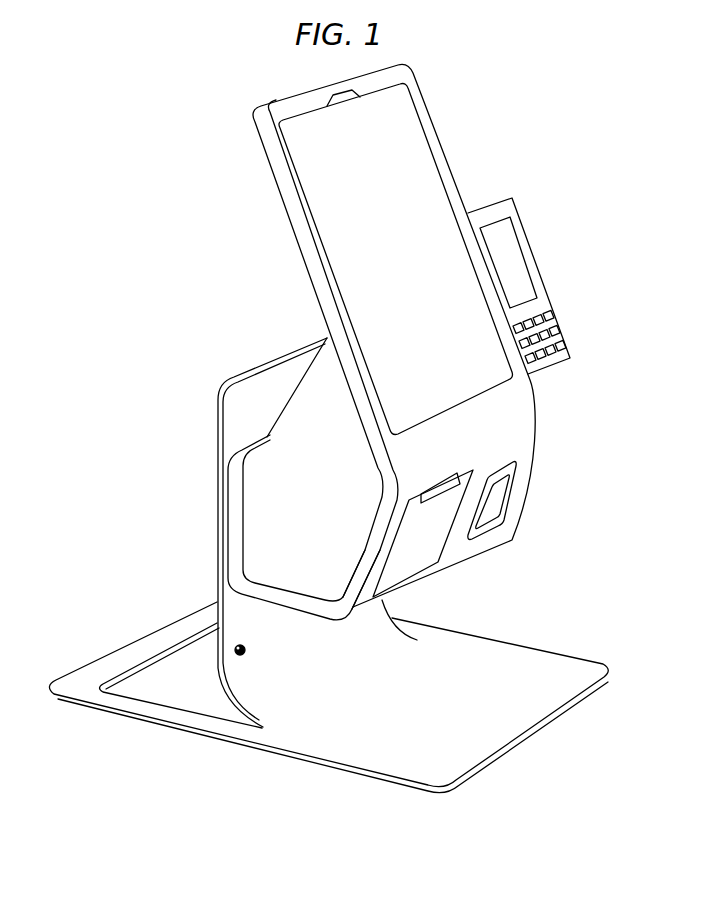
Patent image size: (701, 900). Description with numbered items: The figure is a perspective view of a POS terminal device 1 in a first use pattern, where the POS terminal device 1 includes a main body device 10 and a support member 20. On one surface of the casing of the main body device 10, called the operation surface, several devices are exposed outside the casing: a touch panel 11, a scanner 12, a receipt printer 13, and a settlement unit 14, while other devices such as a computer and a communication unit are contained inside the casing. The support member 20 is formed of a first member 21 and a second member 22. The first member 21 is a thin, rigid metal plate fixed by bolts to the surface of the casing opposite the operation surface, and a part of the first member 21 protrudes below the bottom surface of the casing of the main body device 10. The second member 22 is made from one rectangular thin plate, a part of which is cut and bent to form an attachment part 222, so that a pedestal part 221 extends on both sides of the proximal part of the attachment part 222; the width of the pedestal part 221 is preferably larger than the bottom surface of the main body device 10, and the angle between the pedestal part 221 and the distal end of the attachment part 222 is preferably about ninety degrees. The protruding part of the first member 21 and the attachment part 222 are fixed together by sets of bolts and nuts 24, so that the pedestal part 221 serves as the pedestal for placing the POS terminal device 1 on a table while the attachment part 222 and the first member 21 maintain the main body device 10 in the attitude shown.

The POS terminal device 1 is at (111, 177).
The main body device 10 is at (517, 145).
The touch panel 11 is at (407, 118).
The scanner 12 is at (492, 493).
The receipt printer 13 is at (427, 555).
The settlement unit 14 is at (540, 303).
The support member 20 is at (108, 531).
The first member 21 is at (220, 425).
The second member 22 is at (300, 817).
The pedestal part 221 is at (300, 757).
The attachment part 222 is at (227, 702).
The nut 24 is at (246, 655).